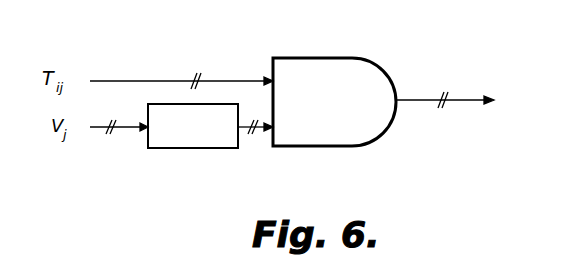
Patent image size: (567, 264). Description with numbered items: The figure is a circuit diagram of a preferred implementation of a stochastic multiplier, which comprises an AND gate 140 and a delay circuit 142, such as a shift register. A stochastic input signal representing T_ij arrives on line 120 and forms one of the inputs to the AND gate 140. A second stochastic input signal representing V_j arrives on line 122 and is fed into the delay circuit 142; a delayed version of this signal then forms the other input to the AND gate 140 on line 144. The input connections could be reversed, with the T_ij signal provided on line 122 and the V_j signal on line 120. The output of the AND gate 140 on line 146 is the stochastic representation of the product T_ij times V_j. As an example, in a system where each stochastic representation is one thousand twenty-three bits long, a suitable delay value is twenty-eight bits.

The line 120 is at (143, 81).
The line 122 is at (128, 130).
The delay circuit 142 is at (174, 148).
The line 144 is at (259, 133).
The AND gate 140 is at (332, 56).
The line 146 is at (428, 100).